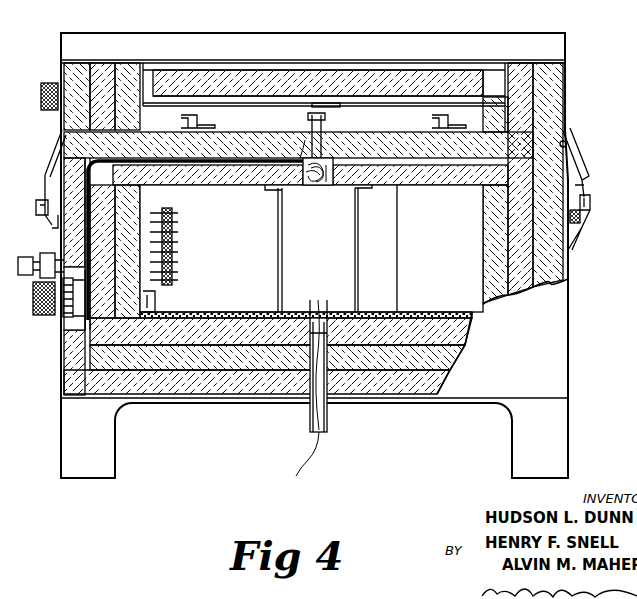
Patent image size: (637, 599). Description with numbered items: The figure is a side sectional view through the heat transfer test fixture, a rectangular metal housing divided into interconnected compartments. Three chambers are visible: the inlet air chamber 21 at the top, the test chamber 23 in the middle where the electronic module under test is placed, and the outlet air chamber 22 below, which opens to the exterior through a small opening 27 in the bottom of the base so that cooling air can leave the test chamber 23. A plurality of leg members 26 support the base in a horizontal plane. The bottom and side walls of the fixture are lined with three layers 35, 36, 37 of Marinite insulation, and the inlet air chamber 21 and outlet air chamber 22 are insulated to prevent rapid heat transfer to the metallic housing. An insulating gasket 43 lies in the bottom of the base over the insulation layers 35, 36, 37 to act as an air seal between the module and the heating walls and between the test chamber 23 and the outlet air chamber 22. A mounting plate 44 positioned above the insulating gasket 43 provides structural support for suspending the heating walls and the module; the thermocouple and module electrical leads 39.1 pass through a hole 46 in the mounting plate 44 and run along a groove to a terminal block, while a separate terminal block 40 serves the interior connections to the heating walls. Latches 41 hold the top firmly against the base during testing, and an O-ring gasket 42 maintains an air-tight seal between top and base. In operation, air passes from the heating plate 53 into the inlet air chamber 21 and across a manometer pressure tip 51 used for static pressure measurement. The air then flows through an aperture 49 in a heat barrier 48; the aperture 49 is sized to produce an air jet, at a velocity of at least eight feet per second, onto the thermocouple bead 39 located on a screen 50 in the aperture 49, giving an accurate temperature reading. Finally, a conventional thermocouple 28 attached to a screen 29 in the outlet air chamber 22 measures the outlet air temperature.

The inlet air chamber 21 is at (393, 110).
The outlet air chamber 22 is at (330, 413).
The test chamber 23 is at (311, 248).
The leg members 26 is at (101, 447).
The small opening 27 is at (307, 400).
The thermocouple 28 is at (306, 460).
The screen 29 is at (317, 313).
The insulation layer 35 is at (72, 68).
The insulation layer 36 is at (107, 70).
The insulation layer 37 is at (133, 75).
The thermocouple bead 39 is at (307, 127).
The thermocouple and module electrical leads 39.1 is at (85, 318).
The terminal block 40 is at (155, 296).
The latches 41 is at (580, 217).
The O-ring gasket 42 is at (562, 137).
The insulating gasket 43 is at (402, 312).
The mounting plate 44 is at (467, 185).
The hole 46 is at (331, 186).
The heat barrier 48 is at (403, 128).
The aperture 49 is at (307, 120).
The screen 50 is at (322, 120).
The manometer pressure tip 51 is at (208, 105).
The heating plate 53 is at (318, 72).